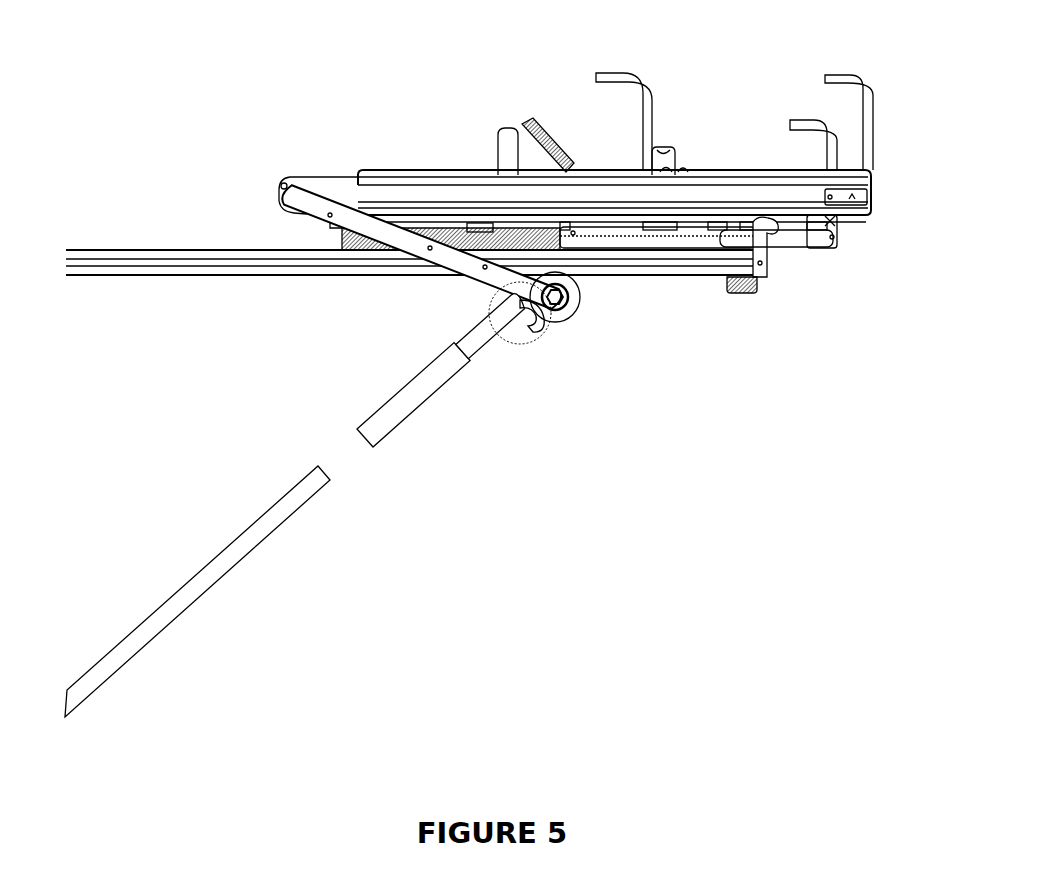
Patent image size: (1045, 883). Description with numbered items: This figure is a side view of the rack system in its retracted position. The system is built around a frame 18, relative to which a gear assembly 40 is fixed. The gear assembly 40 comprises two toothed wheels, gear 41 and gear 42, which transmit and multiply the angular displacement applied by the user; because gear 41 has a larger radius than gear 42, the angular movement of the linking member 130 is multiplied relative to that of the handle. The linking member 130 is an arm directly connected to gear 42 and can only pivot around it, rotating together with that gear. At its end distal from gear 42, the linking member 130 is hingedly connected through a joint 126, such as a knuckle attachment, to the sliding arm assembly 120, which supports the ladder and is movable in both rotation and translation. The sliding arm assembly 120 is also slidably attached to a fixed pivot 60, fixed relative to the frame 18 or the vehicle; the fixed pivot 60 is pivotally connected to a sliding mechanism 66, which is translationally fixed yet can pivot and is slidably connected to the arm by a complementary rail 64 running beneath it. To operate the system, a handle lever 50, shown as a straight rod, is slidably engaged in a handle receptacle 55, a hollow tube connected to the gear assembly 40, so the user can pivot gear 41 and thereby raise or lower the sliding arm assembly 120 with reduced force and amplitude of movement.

The frame 18 is at (194, 277).
The gear assembly 40 is at (582, 298).
The gear 41 is at (537, 333).
The gear 42 is at (573, 315).
The handle lever 50 is at (280, 520).
The handle receptacle 55 is at (413, 413).
The fixed pivot 60 is at (768, 254).
The rail 64 is at (613, 218).
The sliding mechanism 66 is at (807, 241).
The sliding arm assembly 120 is at (607, 170).
The joint 126 is at (303, 176).
The linking member 130 is at (405, 259).